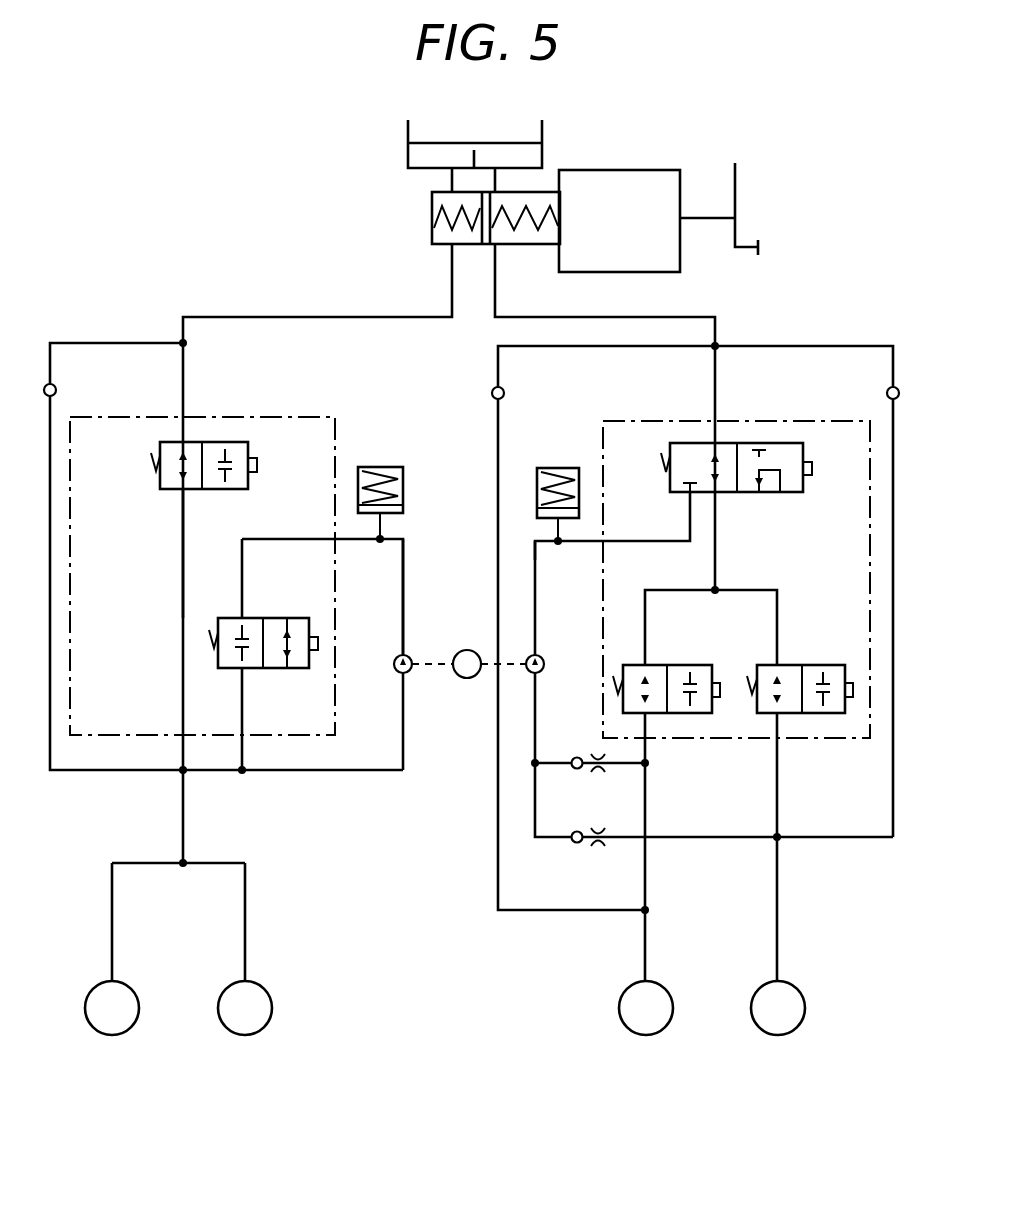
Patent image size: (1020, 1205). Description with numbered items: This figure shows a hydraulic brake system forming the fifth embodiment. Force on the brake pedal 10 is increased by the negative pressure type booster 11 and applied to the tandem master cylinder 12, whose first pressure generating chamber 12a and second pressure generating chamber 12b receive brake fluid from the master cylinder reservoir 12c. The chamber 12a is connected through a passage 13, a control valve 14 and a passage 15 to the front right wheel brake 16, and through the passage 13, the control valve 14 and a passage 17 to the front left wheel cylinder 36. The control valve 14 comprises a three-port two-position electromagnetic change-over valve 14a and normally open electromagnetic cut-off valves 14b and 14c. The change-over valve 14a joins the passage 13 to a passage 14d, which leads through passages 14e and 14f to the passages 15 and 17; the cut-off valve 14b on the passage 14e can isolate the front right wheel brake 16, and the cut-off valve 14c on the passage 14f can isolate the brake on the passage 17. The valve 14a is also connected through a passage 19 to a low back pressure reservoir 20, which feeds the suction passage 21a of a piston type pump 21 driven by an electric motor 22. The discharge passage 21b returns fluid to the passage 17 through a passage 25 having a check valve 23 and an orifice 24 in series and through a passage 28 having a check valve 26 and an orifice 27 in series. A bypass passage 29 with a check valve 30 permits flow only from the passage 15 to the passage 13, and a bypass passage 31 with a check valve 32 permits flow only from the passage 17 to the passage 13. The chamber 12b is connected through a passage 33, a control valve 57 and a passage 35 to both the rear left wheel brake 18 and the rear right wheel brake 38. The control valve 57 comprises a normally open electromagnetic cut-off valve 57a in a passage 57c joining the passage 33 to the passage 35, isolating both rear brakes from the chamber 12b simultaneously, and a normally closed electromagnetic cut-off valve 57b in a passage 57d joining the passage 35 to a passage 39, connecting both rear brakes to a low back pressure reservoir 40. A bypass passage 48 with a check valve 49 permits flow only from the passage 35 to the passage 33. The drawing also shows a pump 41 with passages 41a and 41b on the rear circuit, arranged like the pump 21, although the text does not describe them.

The brake pedal 10 is at (736, 184).
The negative pressure type booster 11 is at (642, 171).
The tandem master cylinder 12 is at (432, 204).
The first pressure generating chamber 12a is at (521, 240).
The second pressure generating chamber 12b is at (436, 234).
The master cylinder reservoir 12c is at (408, 150).
The passage 13 is at (665, 317).
The control valve 14 is at (775, 421).
The electromagnetic change-over valve 14a is at (803, 491).
The normally open electromagnetic cut-off valve 14b is at (812, 665).
The normally open electromagnetic cut-off valve 14c is at (677, 665).
The passage 14d is at (716, 543).
The passage 14e is at (779, 607).
The passage 14f is at (656, 590).
The passage 15 is at (778, 787).
The front right wheel brake 16 is at (803, 1000).
The passage 17 is at (646, 797).
The rear left wheel brake 18 is at (137, 1000).
The passage 19 is at (623, 541).
The low back pressure reservoir 20 is at (556, 470).
The pump 21 is at (543, 660).
The suction passage 21a is at (537, 596).
The discharge passage 21b is at (537, 698).
The electric motor 22 is at (467, 650).
The check valve 23 is at (576, 843).
The orifice 24 is at (600, 844).
The passage 25 is at (550, 840).
The check valve 26 is at (575, 769).
The orifice 27 is at (600, 770).
The passage 28 is at (548, 763).
The bypass passage 29 is at (773, 346).
The check valve 30 is at (887, 393).
The bypass passage 31 is at (601, 347).
The check valve 32 is at (504, 393).
The passage 33 is at (298, 317).
The passage 35 is at (184, 827).
The front left wheel cylinder 36 is at (671, 1000).
The rear right wheel brake 38 is at (270, 1000).
The passage 39 is at (282, 539).
The low back pressure reservoir 40 is at (383, 467).
The pump 41 is at (398, 658).
The pump discharge passage 41a is at (403, 607).
The pump suction passage 41b is at (403, 731).
The bypass passage 48 is at (135, 343).
The check valve 49 is at (57, 392).
The control valve 57 is at (290, 417).
The normally open electromagnetic cut-off valve 57a is at (158, 456).
The normally closed electromagnetic cut-off valve 57b is at (288, 618).
The passage 57c is at (182, 604).
The passage 57d is at (243, 701).